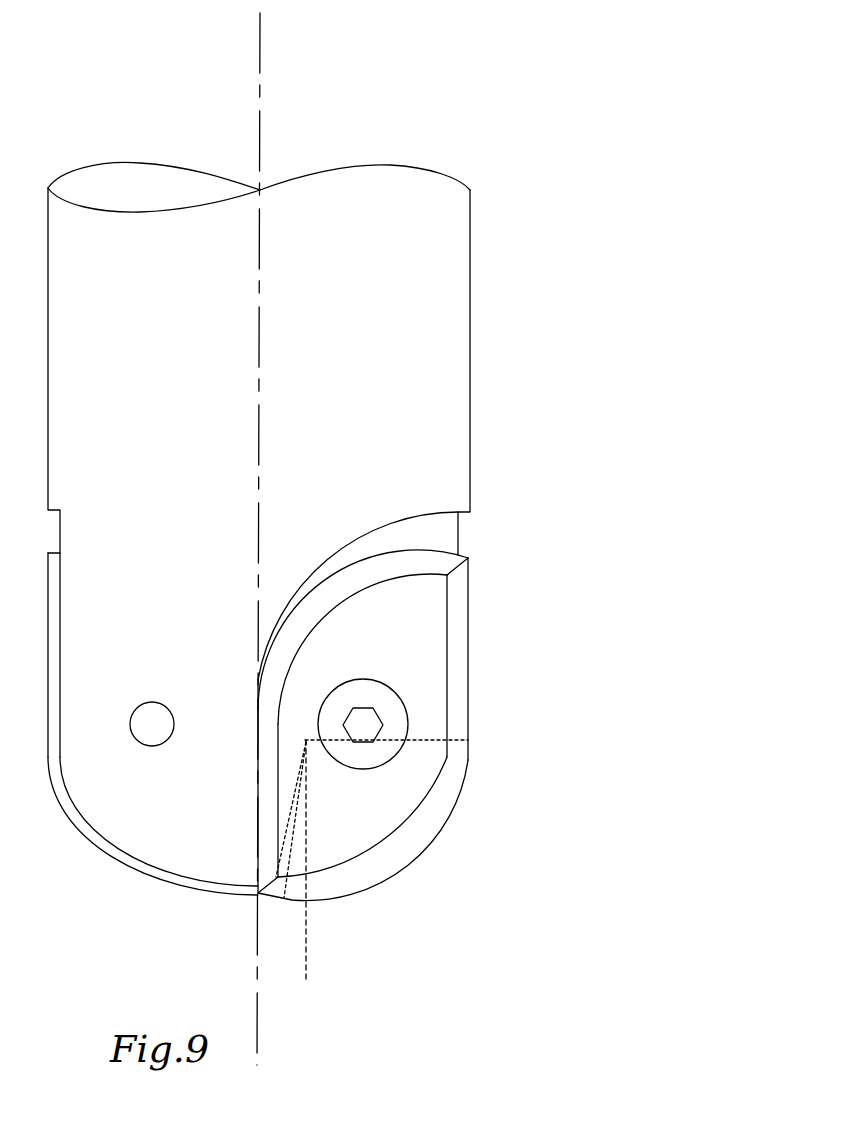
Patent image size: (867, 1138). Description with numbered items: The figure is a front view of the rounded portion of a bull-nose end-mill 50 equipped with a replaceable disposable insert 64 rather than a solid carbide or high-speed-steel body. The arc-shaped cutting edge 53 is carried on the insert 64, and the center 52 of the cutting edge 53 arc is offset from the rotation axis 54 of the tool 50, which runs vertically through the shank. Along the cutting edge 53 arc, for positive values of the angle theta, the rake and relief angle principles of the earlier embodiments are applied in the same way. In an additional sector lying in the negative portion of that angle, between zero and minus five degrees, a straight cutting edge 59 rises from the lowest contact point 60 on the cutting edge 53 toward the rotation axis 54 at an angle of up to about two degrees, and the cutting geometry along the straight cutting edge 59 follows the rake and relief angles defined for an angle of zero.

The bull-nose end-mill 50 is at (467, 52).
The center of the cutting edge arc 52 is at (314, 745).
The cutting edge 53 is at (424, 853).
The rotation axis 54 is at (258, 542).
The straight cutting edge 59 is at (289, 902).
The lowest contact point 60 is at (308, 903).
The replaceable disposable insert 64 is at (442, 760).